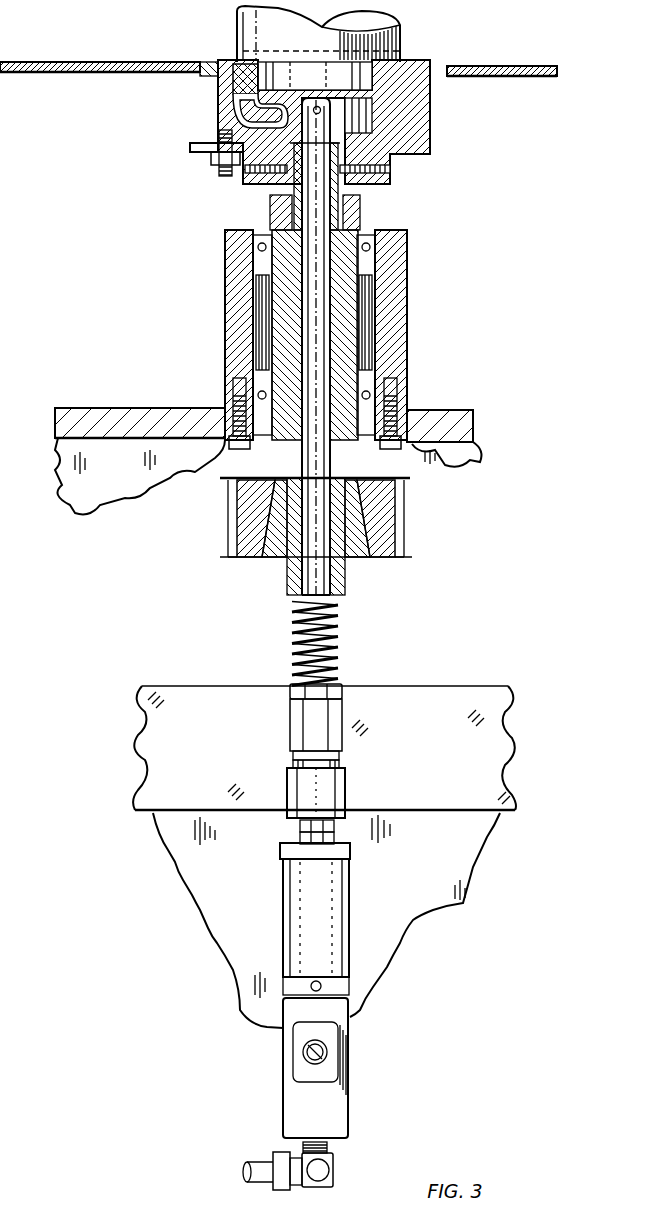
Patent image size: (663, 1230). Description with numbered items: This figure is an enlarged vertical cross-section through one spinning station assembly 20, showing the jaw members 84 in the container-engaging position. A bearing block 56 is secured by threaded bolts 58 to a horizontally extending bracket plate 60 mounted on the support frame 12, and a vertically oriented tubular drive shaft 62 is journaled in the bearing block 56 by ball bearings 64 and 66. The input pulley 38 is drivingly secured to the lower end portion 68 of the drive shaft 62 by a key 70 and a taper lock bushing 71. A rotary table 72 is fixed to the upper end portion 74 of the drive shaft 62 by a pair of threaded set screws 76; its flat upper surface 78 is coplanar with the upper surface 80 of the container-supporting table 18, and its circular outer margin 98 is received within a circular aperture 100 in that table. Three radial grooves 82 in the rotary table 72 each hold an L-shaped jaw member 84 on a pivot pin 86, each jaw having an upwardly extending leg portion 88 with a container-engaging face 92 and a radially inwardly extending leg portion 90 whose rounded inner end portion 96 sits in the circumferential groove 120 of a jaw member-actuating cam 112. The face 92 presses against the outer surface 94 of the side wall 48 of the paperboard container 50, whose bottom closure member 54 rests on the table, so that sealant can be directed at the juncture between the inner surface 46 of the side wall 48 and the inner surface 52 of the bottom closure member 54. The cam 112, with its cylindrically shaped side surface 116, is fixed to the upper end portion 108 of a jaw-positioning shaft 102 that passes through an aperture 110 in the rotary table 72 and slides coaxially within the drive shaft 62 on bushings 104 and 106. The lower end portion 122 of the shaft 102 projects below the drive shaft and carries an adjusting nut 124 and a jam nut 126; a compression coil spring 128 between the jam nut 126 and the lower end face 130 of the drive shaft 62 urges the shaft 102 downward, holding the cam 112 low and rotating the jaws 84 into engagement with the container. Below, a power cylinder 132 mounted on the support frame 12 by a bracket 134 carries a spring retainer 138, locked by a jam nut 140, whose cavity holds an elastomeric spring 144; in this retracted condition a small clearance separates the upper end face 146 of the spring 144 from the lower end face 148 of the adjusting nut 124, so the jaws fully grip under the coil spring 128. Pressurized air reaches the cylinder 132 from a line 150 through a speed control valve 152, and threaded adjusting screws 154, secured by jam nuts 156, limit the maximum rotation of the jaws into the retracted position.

The support frame 12 is at (470, 688).
The container-supporting table 18 is at (298, 62).
The spinning station assembly 20 is at (325, 135).
The input pulley 38 is at (335, 542).
The inner surface 46 is at (335, 34).
The side wall 48 is at (238, 22).
The paperboard container 50 is at (335, 34).
The inner surface 52 is at (335, 34).
The bottom closure member 54 is at (335, 34).
The bearing block 56 is at (346, 317).
The threaded bolts 58 is at (400, 398).
The bracket plate 60 is at (142, 410).
The tubular drive shaft 62 is at (340, 384).
The ball bearing 64 is at (346, 317).
The ball bearing 66 is at (346, 317).
The lower end portion 68 is at (330, 297).
The key 70 is at (335, 542).
The taper lock bushing 71 is at (345, 566).
The rotary table 72 is at (325, 135).
The upper end portion 74 is at (403, 312).
The threaded set screws 76 is at (325, 135).
The upper surface 78 is at (325, 135).
The upper surface 80 is at (298, 62).
The grooves 82 is at (325, 135).
The jaw members 84 is at (197, 104).
The pivot pin 86 is at (197, 104).
The upwardly extending leg portion 88 is at (197, 104).
The radially inwardly extending leg portion 90 is at (436, 158).
The container-engaging face 92 is at (325, 135).
The outer surface 94 is at (335, 34).
The inner end portion 96 is at (193, 166).
The circular outer margin 98 is at (298, 62).
The circular aperture 100 is at (546, 69).
The jaw-positioning shaft 102 is at (348, 369).
The bushing 104 is at (340, 384).
The bushing 106 is at (340, 192).
The upper end portion 108 is at (325, 135).
The aperture 110 is at (325, 135).
The jaw member-actuating cam 112 is at (250, 112).
The cylindrically shaped side surface 116 is at (335, 34).
The circumferential groove 120 is at (325, 135).
The lower end portion 122 is at (340, 631).
The adjusting nut 124 is at (311, 731).
The jam nut 126 is at (311, 731).
The compression coil spring 128 is at (313, 644).
The lower end face 130 is at (340, 384).
The power cylinder 132 is at (349, 919).
The bracket 134 is at (350, 852).
The spring retainer 138 is at (317, 806).
The jam nut 140 is at (346, 788).
The elastomeric spring 144 is at (311, 731).
The upper end face 146 is at (311, 731).
The lower end face 148 is at (292, 692).
The line 150 is at (252, 1165).
The speed control valve 152 is at (345, 1112).
The threaded adjusting screws 154 is at (204, 146).
The jam nuts 156 is at (193, 166).